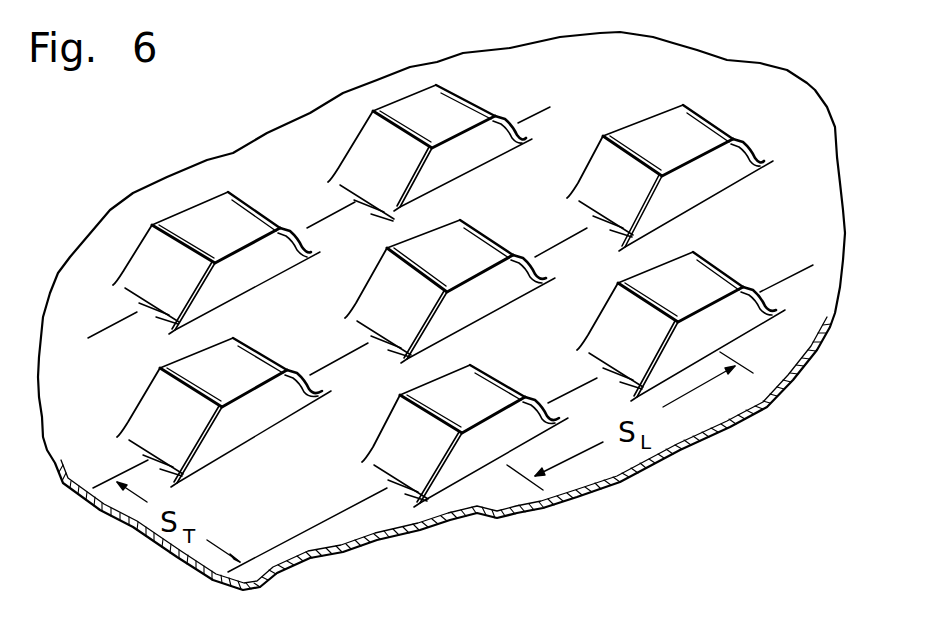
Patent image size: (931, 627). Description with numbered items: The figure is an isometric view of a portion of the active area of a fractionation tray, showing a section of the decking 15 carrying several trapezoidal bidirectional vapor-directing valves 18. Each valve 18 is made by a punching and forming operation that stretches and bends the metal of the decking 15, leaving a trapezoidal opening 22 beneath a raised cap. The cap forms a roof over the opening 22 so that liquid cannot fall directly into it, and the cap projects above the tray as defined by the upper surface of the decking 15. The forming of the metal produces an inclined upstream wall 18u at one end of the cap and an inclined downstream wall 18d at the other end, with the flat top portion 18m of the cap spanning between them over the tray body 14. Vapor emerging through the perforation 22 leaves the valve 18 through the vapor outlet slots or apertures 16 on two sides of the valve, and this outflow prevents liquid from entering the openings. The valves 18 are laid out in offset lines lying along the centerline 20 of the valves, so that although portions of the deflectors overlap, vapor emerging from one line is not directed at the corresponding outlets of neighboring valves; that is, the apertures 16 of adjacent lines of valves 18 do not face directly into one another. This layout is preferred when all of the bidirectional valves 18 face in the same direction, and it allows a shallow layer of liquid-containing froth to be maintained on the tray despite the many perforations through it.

The plate / sheet 14 is at (466, 52).
The decking 15 is at (266, 142).
The vapor outlet slots or apertures 16 is at (698, 187).
The valve 18 is at (190, 214).
The upstream leg or wall 18u is at (603, 167).
The middle top portion of protuberance 18m is at (652, 130).
The downstream wall 18d is at (752, 152).
The centerline 20 is at (118, 322).
The trapezoidal opening 22 is at (737, 168).